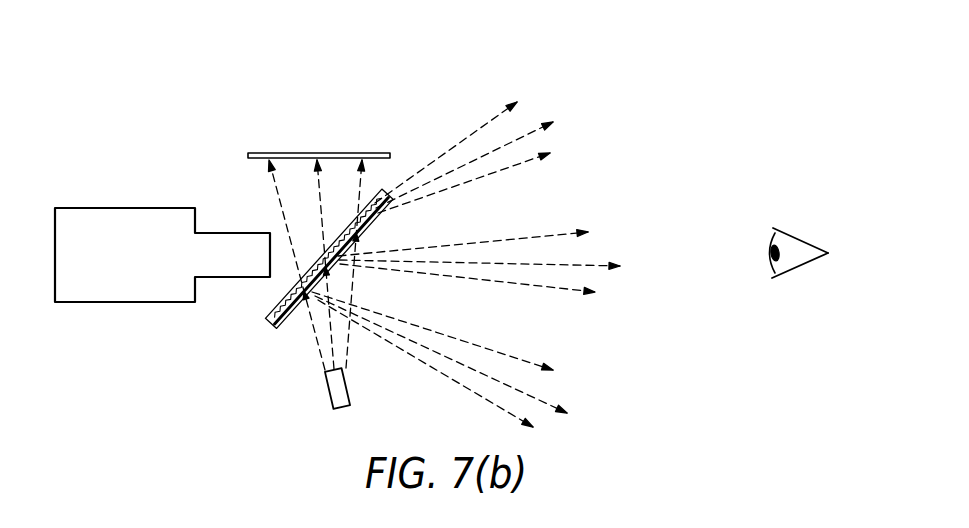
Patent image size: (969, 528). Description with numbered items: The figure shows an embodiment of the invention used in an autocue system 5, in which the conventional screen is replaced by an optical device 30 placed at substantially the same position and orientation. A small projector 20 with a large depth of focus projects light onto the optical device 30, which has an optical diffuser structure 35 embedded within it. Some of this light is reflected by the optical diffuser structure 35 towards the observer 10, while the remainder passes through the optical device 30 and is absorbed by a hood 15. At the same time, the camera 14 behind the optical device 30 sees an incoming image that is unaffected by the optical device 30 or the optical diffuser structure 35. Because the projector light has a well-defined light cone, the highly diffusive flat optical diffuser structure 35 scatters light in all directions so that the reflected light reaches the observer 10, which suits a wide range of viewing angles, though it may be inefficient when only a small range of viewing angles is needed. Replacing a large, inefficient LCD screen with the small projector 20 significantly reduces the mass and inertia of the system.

The autocue system 5 is at (222, 70).
The observer 10 is at (805, 240).
The camera 14 is at (74, 208).
The hood 15 is at (366, 153).
The projector 20 is at (327, 397).
The optical device 30 is at (250, 325).
The optical diffuser structure 35 is at (277, 328).